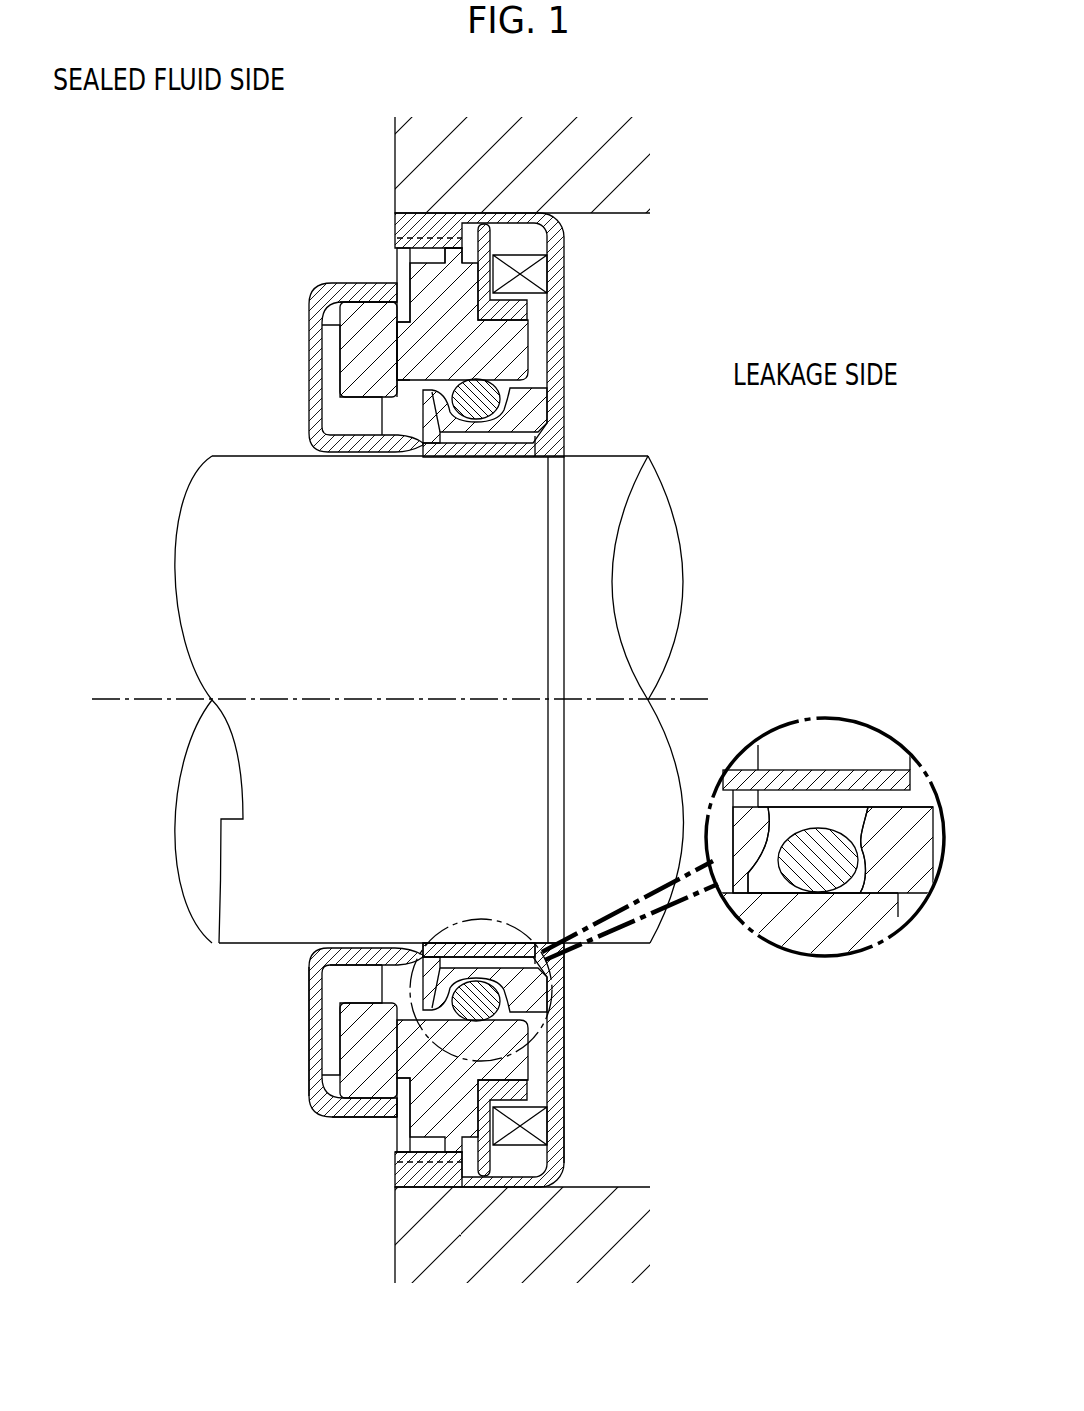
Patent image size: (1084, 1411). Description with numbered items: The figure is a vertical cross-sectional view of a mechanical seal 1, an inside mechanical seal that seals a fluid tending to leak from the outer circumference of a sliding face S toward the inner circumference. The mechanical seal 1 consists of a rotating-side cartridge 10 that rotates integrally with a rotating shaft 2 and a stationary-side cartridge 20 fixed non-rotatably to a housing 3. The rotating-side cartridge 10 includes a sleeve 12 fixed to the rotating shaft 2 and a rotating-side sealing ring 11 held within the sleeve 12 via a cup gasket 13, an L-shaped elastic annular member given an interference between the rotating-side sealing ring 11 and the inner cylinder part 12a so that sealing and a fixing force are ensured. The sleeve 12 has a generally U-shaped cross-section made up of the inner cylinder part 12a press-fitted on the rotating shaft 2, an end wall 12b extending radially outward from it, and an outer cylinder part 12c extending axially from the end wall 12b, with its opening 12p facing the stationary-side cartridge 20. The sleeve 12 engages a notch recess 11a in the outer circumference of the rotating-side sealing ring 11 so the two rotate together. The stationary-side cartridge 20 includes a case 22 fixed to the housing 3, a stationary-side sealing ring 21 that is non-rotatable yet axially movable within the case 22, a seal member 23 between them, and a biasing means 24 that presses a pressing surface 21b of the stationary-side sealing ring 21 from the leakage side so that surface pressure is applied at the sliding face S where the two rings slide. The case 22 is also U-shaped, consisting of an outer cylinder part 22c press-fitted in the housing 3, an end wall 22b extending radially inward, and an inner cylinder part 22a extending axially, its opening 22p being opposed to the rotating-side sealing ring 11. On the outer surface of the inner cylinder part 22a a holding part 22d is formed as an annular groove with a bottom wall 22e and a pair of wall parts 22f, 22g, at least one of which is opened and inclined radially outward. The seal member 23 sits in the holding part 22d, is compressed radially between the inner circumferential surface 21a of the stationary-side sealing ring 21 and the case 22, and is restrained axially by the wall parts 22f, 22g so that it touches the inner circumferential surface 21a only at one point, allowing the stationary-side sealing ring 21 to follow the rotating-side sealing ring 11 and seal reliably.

The mechanical seal 1 is at (216, 193).
The rotating shaft 2 is at (212, 456).
The housing 3 is at (413, 147).
The rotating-side cartridge 10 is at (320, 277).
The rotating-side sealing ring 11 is at (350, 341).
The notch recess 11a is at (345, 300).
The sleeve 12 is at (315, 393).
The inner cylinder part 12a is at (307, 958).
The end wall 12b is at (310, 1037).
The outer cylinder part 12c is at (328, 1122).
The opening 12p is at (393, 1122).
The cup gasket 13 is at (328, 372).
The stationary-side cartridge 20 is at (390, 224).
The stationary-side sealing ring 21 is at (513, 353).
The inner circumferential surface 21a is at (410, 372).
The pressing surface 21b is at (497, 283).
The case 22 is at (567, 312).
The inner cylinder part 22a is at (557, 1003).
The end wall 22b is at (563, 1063).
The outer cylinder part 22c is at (528, 1188).
The holding part 22d is at (858, 870).
The bottom wall 22e is at (862, 850).
The wall part 22f is at (745, 865).
The wall part 22g is at (884, 868).
The opening 22p is at (392, 1147).
The seal member 23 is at (547, 420).
The biasing means 24 is at (543, 270).
The sliding face S is at (395, 402).